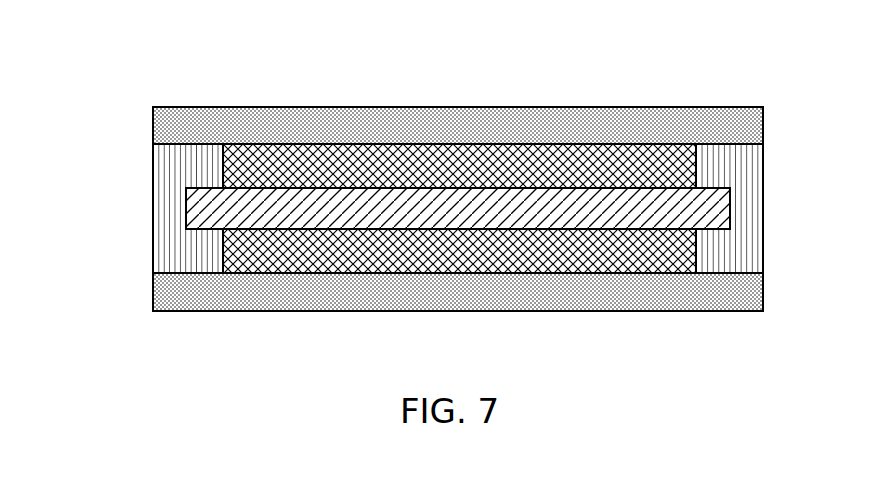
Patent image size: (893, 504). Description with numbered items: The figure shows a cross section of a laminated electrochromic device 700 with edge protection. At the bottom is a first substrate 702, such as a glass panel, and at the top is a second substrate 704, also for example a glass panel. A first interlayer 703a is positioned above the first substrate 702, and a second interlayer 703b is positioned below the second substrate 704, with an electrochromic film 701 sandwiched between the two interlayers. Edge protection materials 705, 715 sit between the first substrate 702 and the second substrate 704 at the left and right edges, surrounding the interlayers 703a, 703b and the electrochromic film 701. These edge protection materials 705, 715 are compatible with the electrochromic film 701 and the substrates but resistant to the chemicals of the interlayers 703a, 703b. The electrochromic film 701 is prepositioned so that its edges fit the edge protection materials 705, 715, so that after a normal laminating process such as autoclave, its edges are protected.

The laminated electrochromic device 700 is at (116, 95).
The electrochromic film 701 is at (423, 212).
The first substrate 702 is at (232, 292).
The first interlayer 703a is at (635, 249).
The second interlayer 703b is at (542, 173).
The second substrate 704 is at (332, 128).
The edge protection material 705 is at (179, 167).
The edge protection material 715 is at (717, 173).